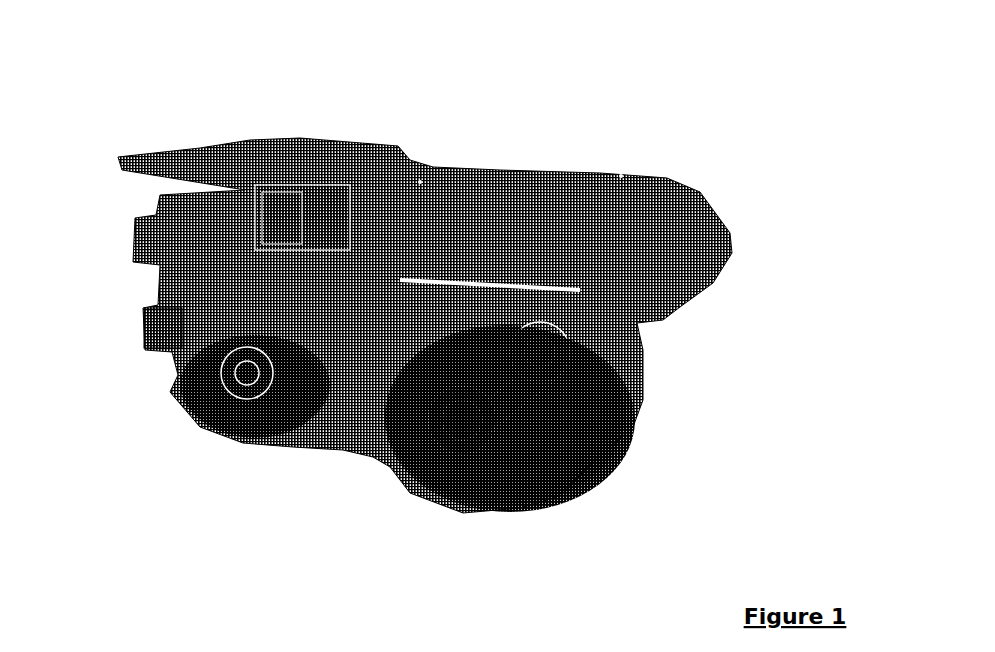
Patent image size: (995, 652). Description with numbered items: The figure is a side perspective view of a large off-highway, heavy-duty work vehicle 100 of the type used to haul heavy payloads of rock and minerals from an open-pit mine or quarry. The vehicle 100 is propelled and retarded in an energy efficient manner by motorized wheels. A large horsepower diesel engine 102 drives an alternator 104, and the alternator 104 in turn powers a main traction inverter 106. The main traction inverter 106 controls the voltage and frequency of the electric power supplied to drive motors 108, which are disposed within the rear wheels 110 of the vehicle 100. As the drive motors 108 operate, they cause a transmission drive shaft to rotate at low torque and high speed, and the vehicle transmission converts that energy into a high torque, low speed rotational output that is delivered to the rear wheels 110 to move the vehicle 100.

The heavy-duty work vehicle 100 is at (425, 279).
The diesel engine 102 is at (106, 361).
The alternator 104 is at (357, 420).
The main traction inverter 106 is at (325, 182).
The drive motors 108 is at (596, 388).
The rear wheels 110 is at (604, 442).